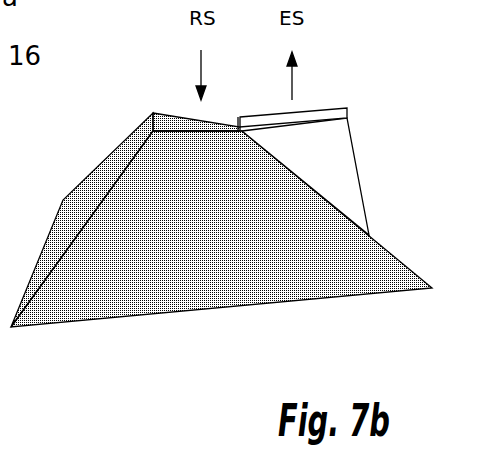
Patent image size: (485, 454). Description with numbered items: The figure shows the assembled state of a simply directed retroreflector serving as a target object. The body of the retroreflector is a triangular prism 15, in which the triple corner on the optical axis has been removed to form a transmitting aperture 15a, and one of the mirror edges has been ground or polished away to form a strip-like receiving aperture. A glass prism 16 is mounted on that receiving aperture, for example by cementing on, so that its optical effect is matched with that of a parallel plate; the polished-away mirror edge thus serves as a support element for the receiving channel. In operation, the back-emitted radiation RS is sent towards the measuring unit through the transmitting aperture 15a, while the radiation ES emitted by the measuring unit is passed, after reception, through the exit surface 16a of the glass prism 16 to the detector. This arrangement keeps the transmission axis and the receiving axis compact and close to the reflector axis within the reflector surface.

The triangular prism 15 is at (221, 240).
The transmitting aperture 15a is at (146, 112).
The glass prism 16 is at (335, 176).
The exit surface 16a is at (332, 105).